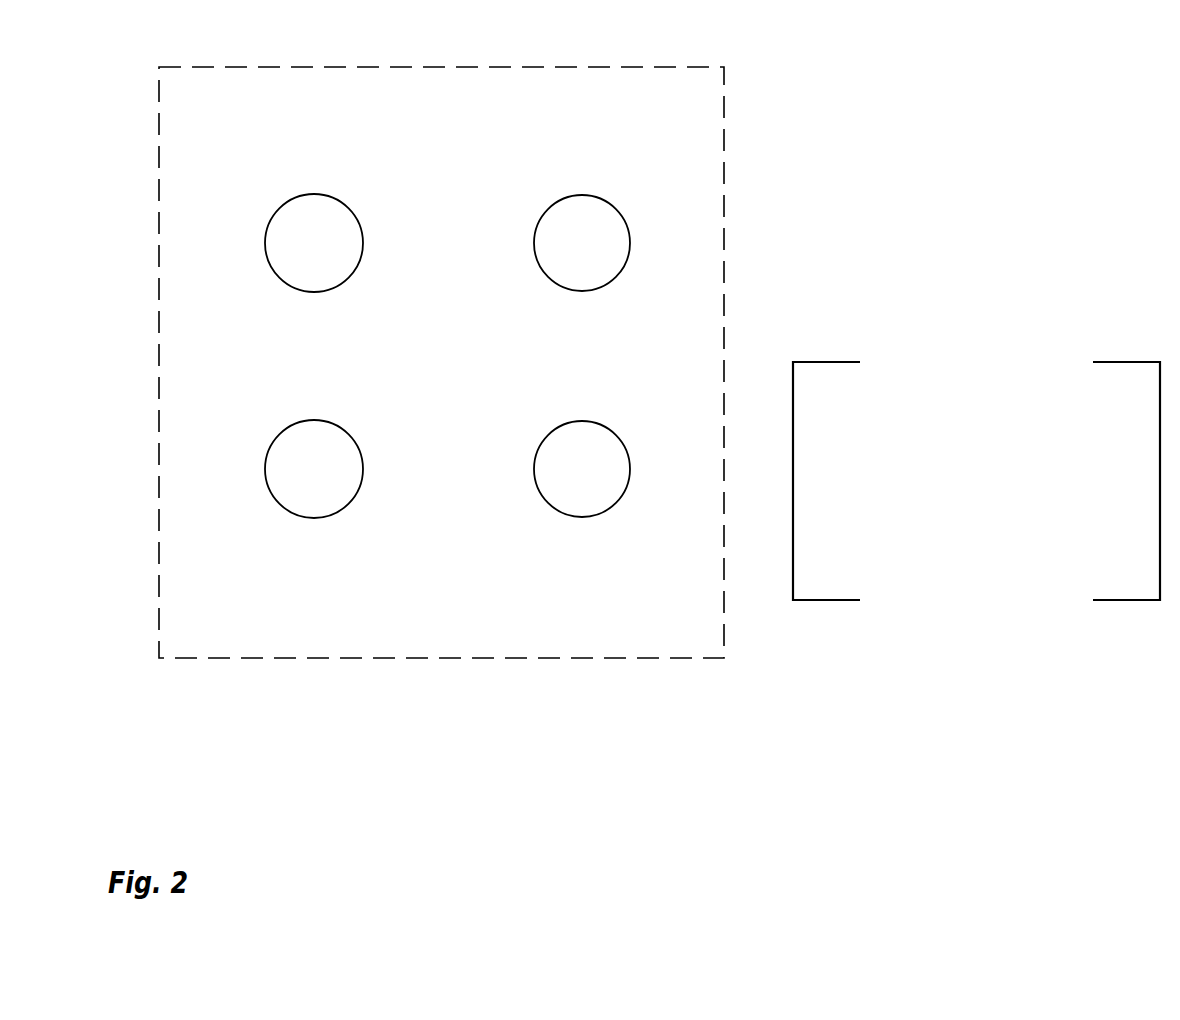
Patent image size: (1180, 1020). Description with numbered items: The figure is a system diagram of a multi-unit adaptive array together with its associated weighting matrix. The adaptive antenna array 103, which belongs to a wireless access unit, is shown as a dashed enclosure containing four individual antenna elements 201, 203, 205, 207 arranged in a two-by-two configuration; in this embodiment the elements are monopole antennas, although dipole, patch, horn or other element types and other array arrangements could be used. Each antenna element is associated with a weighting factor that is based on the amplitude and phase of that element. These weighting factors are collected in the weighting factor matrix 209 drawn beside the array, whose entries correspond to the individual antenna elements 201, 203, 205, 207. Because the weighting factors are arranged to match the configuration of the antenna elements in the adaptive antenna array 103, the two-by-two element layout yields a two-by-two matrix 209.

The adaptive antenna array 103 is at (424, 66).
The antenna element 201 is at (312, 194).
The antenna element 203 is at (583, 195).
The antenna element 205 is at (321, 420).
The antenna element 207 is at (583, 420).
The weighting factor matrix 209 is at (840, 362).